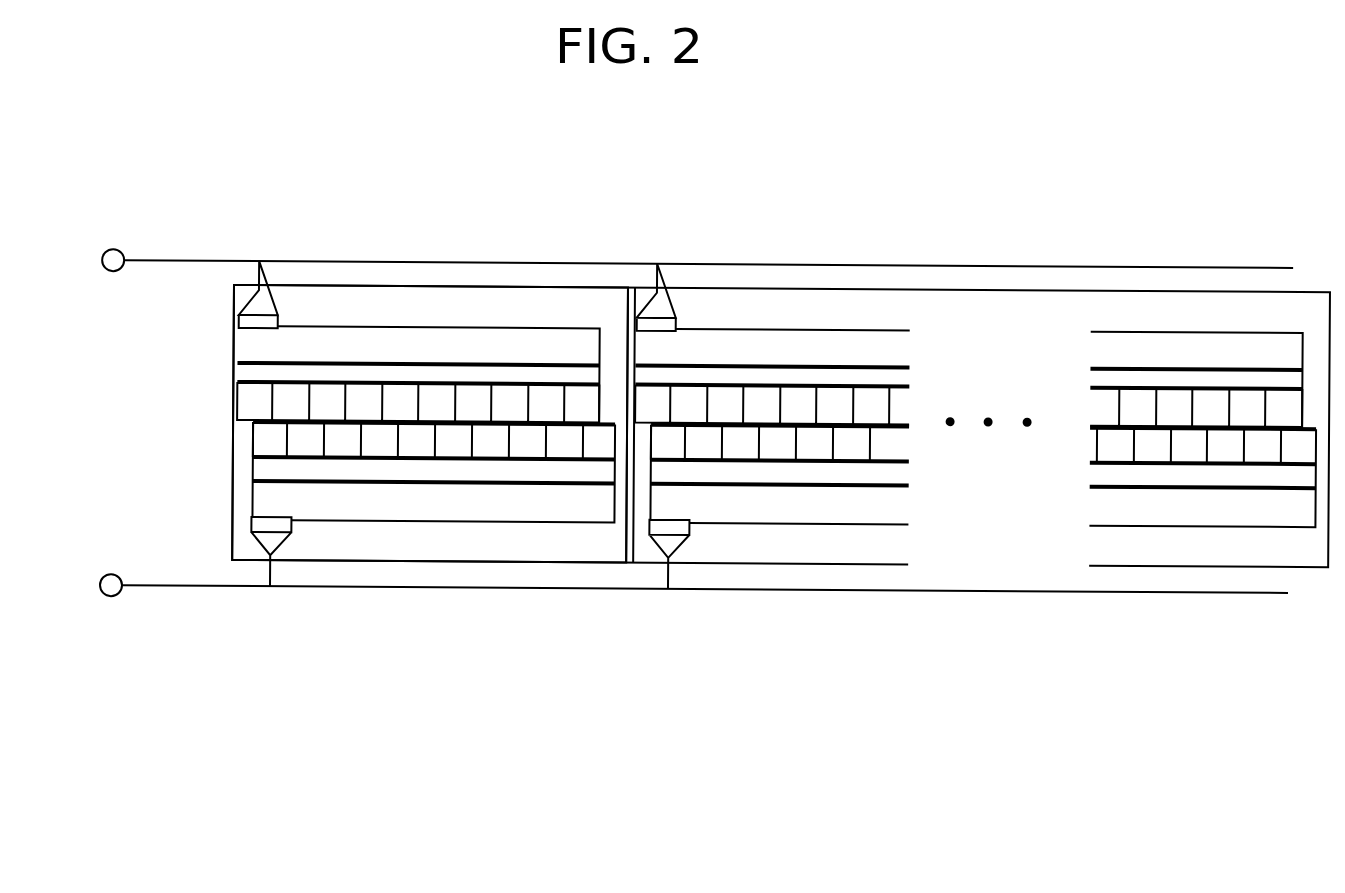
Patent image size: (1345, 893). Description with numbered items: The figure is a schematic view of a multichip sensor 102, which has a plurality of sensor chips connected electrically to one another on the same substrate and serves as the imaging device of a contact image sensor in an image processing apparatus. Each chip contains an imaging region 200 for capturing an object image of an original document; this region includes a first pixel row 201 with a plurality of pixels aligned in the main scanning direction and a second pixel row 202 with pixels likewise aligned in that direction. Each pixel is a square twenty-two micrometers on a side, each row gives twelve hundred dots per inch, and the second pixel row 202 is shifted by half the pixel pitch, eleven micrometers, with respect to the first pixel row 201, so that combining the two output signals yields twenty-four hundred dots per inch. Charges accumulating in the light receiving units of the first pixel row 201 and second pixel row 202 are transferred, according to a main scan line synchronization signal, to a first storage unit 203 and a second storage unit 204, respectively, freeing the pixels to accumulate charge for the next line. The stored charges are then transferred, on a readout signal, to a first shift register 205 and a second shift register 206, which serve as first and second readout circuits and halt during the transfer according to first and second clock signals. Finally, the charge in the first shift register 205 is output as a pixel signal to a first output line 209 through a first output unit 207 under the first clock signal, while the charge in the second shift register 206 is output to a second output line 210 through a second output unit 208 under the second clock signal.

The multichip sensor 102 is at (1119, 244).
The imaging region 200 is at (93, 390).
The first pixel row 201 is at (243, 409).
The second pixel row 202 is at (243, 442).
The first storage unit 203 is at (243, 375).
The second storage unit 204 is at (243, 475).
The first shift register 205 is at (243, 344).
The second shift register 206 is at (243, 509).
The first output unit 207 is at (243, 310).
The second output unit 208 is at (243, 542).
The first output line 209 is at (583, 259).
The second output line 210 is at (597, 588).